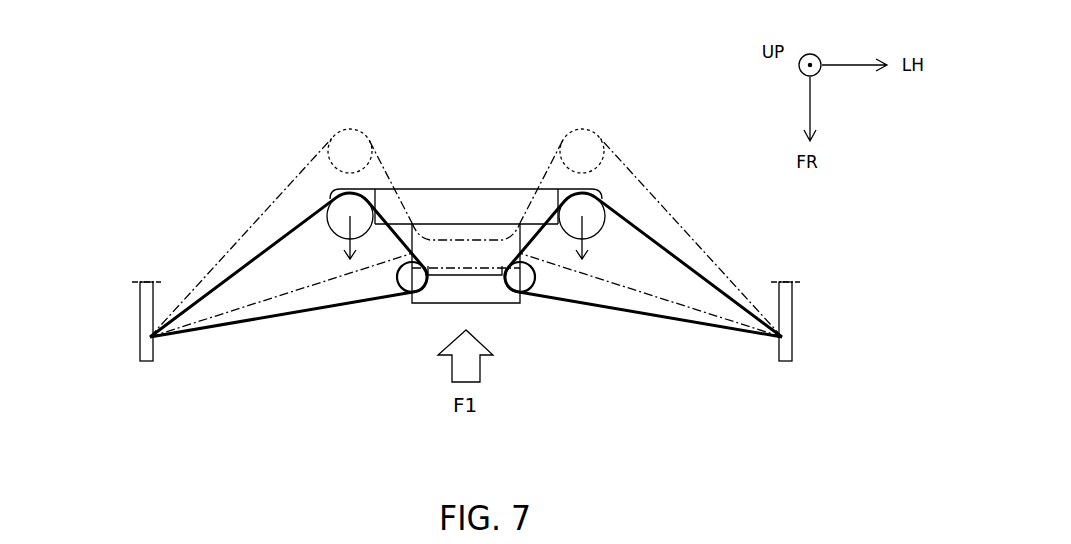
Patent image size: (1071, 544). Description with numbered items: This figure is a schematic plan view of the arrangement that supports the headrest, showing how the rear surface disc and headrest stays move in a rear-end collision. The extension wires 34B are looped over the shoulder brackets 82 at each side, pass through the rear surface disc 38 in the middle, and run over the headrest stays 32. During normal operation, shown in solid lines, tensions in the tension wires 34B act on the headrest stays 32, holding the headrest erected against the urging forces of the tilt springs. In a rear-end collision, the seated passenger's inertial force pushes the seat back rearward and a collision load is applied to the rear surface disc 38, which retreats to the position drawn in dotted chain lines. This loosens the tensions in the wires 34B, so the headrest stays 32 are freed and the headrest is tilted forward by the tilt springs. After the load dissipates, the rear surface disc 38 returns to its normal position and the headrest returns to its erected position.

The headrest stays 32 is at (357, 141).
The extension wires 34B is at (263, 212).
The rear surface disc 38 is at (505, 303).
The shoulder brackets 82 is at (140, 308).